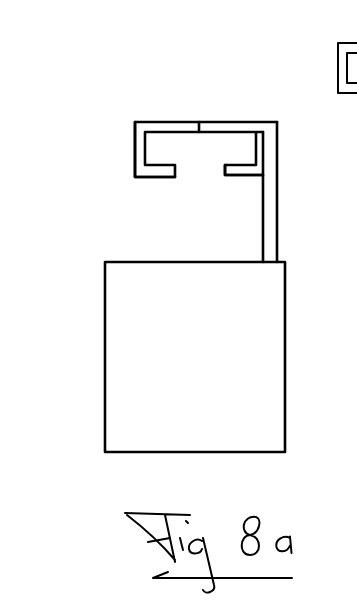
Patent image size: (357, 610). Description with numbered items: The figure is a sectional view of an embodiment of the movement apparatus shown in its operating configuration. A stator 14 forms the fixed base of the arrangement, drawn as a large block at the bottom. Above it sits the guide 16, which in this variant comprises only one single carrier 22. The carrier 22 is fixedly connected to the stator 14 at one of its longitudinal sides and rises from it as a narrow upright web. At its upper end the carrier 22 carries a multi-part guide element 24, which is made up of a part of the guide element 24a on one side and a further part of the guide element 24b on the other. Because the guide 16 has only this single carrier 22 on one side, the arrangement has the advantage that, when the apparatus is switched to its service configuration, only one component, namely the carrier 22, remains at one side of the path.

The stator 14 is at (227, 405).
The guide 16 is at (227, 208).
The carrier 22 is at (321, 220).
The guide element 24 is at (247, 108).
The part of the guide element 24a is at (40, 90).
The part of the guide element 24b is at (152, 59).